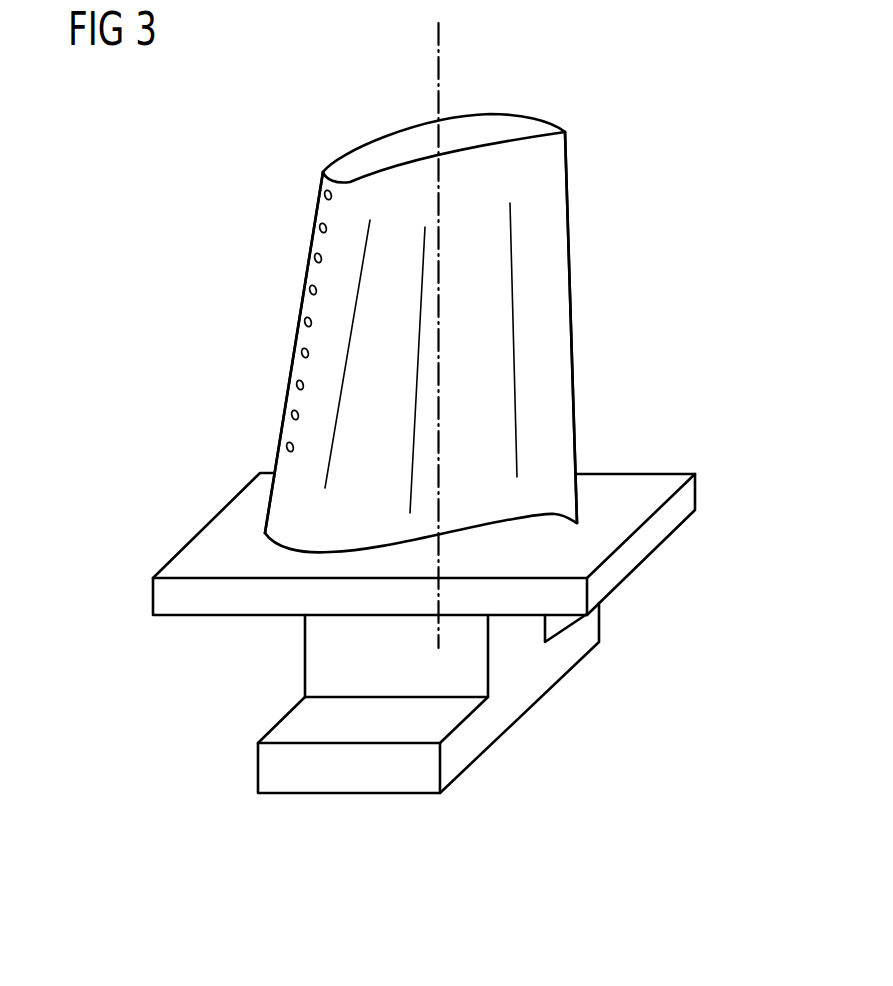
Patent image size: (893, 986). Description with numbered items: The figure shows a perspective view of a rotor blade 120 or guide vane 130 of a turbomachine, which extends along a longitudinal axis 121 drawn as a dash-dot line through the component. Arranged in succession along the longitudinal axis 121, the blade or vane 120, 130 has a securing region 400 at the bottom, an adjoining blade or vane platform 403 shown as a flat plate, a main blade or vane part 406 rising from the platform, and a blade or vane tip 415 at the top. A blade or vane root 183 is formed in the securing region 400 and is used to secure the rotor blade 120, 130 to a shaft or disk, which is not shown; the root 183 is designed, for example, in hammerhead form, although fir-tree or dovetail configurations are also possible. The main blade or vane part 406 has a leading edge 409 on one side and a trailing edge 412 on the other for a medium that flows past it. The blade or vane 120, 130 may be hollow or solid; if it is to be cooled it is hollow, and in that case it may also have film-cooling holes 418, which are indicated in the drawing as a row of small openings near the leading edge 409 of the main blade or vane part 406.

The longitudinal axis 121 is at (440, 43).
The blade or vane tip 415 is at (377, 148).
The film-cooling holes 418 is at (324, 196).
The leading edge 409 is at (294, 270).
The main blade or vane part 406 is at (322, 373).
The trailing edge 412 is at (588, 293).
The blade or vane platform 403 is at (652, 538).
The securing region 400 is at (417, 698).
The blade or vane root 183 is at (293, 728).
The rotor blade 120 is at (401, 406).
The guide vane 130 is at (401, 406).